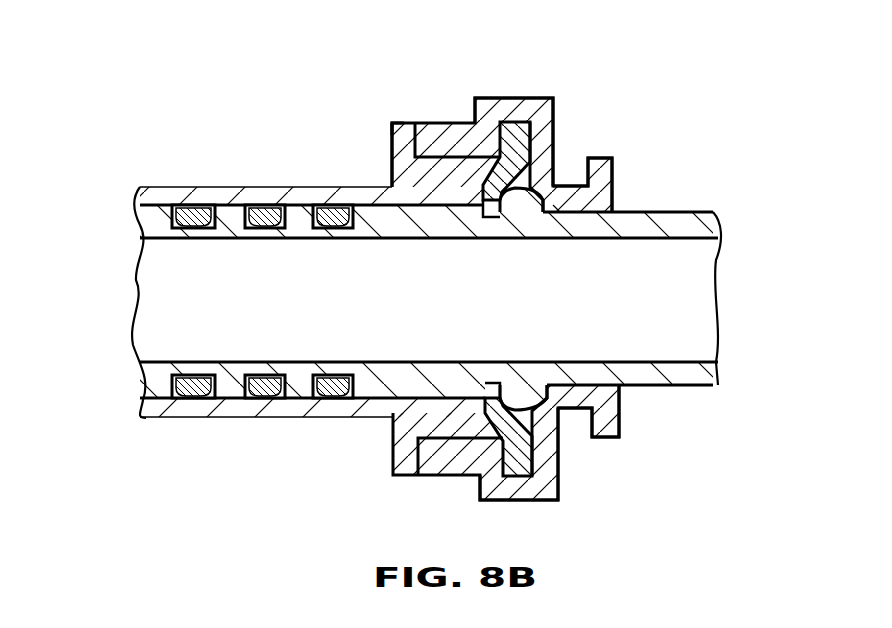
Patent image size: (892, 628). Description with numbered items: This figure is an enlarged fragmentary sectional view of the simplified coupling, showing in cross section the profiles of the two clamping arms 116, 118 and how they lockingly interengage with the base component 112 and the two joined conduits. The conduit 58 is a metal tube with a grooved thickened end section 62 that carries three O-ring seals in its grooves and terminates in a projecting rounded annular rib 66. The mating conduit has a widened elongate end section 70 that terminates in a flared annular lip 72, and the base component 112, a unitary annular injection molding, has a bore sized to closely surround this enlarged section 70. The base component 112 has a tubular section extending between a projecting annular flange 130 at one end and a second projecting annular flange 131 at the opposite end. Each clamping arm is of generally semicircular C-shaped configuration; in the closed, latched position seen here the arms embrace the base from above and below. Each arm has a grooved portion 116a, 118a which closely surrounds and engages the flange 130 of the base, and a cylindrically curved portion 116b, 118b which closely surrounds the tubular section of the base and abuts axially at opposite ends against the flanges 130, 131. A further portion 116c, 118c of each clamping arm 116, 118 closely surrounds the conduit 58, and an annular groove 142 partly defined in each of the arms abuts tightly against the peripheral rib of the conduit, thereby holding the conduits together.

The conduit 58 is at (700, 211).
The thickened end section 62 is at (190, 238).
The widened elongate end section 70 is at (160, 187).
The projecting rounded annular rib 66 is at (527, 205).
The flared annular lip 72 is at (507, 412).
The base component 112 is at (389, 146).
The clamping arm 116 is at (523, 115).
The grooved portion 116a is at (508, 98).
The cylindrically curved portion 116b is at (423, 122).
The further portion 116c is at (597, 178).
The clamping arm 118 is at (546, 464).
The grooved portion 118a is at (528, 488).
The cylindrically curved portion 118b is at (452, 463).
The further portion 118c is at (573, 400).
The projecting annular flange 130 is at (514, 141).
The second projecting annular flange 131 is at (402, 122).
The annular groove 142 is at (560, 205).